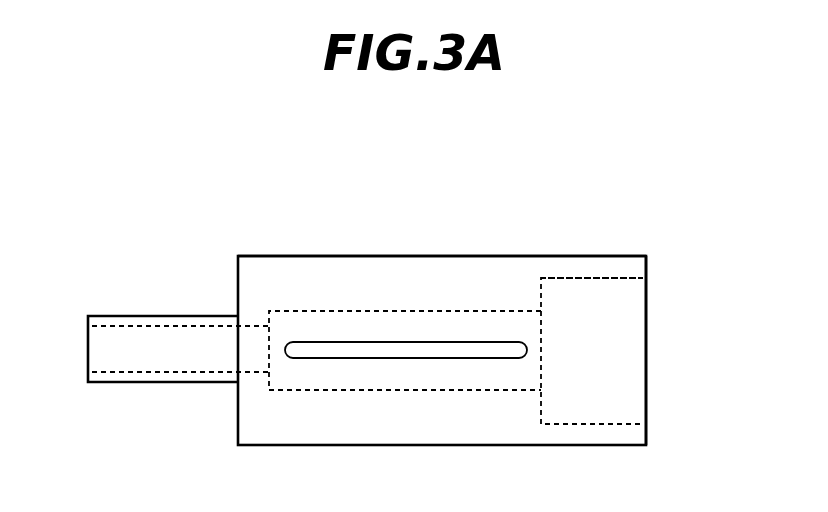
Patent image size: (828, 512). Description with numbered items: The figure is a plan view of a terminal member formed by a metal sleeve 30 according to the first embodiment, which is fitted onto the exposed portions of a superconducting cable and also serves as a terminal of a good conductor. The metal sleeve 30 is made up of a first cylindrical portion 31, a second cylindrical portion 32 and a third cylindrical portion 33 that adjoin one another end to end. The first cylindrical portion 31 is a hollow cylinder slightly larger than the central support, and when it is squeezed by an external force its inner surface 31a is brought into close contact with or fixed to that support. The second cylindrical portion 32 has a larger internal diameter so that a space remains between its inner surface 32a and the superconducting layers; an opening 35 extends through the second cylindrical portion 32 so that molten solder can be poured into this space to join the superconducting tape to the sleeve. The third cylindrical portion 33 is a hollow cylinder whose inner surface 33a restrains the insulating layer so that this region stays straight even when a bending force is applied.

The metal sleeve 30 is at (503, 222).
The first cylindrical portion 31 is at (160, 316).
The inner surface of the first cylindrical portion 31a is at (160, 360).
The second cylindrical portion 32 is at (307, 255).
The inner surface of the second cylindrical portion 32a is at (406, 390).
The third cylindrical portion 33 is at (598, 257).
The inner surface of the third cylindrical portion 33a is at (593, 278).
The opening 35 is at (463, 352).